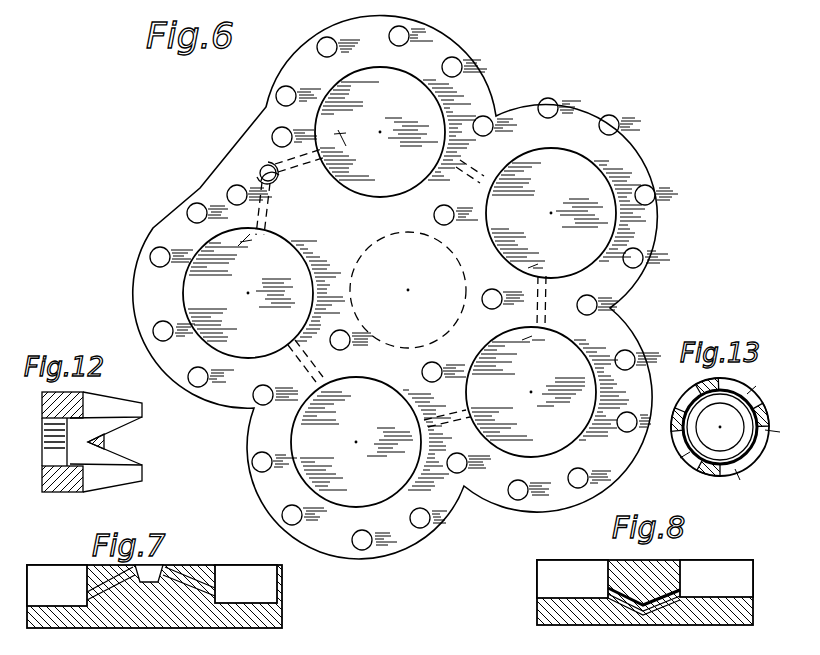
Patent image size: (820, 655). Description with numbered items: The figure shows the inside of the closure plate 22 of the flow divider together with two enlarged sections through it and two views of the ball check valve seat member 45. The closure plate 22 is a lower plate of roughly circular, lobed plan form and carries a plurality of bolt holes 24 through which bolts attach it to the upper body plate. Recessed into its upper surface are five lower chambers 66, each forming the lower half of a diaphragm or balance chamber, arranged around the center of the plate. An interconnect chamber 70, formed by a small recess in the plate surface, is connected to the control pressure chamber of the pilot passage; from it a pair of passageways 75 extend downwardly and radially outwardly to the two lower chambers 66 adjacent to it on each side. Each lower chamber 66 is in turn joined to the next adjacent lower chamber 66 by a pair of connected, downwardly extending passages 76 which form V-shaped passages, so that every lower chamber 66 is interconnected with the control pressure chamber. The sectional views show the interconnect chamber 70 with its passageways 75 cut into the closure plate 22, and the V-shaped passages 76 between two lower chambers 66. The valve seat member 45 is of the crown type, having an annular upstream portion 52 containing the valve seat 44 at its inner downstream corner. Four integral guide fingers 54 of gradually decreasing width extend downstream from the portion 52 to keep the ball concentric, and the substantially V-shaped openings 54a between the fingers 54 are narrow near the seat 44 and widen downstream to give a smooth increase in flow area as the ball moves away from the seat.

In FIG. 7, the closure plate 22 is at (145, 625).
In FIG. 8, the closure plate 22 is at (588, 620).
In FIG. 6, the bolt holes 24 is at (612, 124).
In FIG. 12, the valve seat 44 is at (96, 470).
In FIG. 13, the valve seat 44 is at (750, 444).
In FIG. 12, the valve seat member 45 is at (62, 480).
In FIG. 13, the valve seat member 45 is at (692, 452).
In FIG. 12, the annular upstream portion 52 is at (74, 394).
In FIG. 12, the guide fingers 54 is at (142, 476).
In FIG. 13, the guide fingers 54 is at (696, 392).
In FIG. 12, the openings 54a is at (104, 442).
In FIG. 13, the openings 54a is at (738, 384).
In FIG. 6, the lower chambers 66 is at (410, 88).
In FIG. 7, the lower chambers 66 is at (42, 578).
In FIG. 8, the lower chambers 66 is at (588, 572).
In FIG. 6, the interconnect chamber 70 is at (264, 163).
In FIG. 7, the interconnect chamber 70 is at (152, 572).
In FIG. 6, the passageways 75 is at (274, 205).
In FIG. 7, the passageways 75 is at (100, 580).
In FIG. 6, the passages 76 is at (470, 165).
In FIG. 8, the passages 76 is at (626, 604).